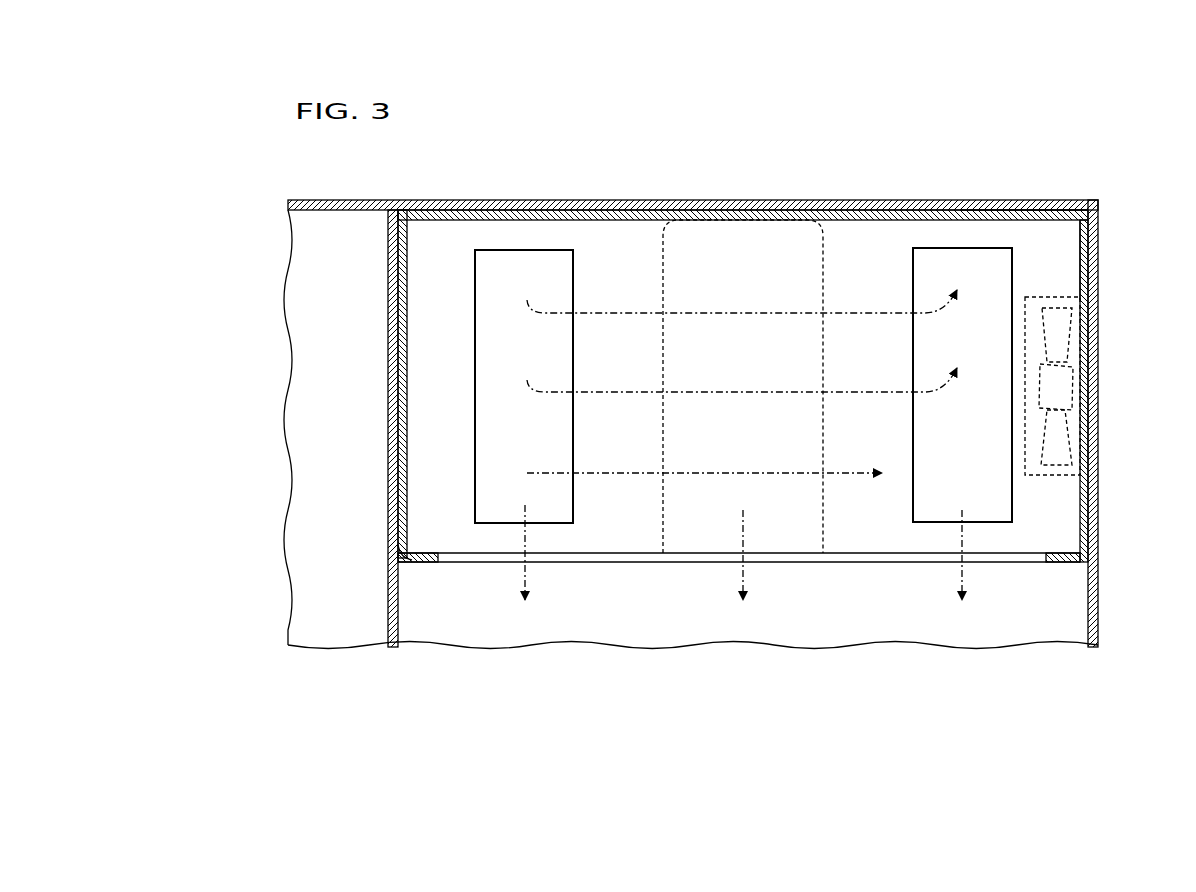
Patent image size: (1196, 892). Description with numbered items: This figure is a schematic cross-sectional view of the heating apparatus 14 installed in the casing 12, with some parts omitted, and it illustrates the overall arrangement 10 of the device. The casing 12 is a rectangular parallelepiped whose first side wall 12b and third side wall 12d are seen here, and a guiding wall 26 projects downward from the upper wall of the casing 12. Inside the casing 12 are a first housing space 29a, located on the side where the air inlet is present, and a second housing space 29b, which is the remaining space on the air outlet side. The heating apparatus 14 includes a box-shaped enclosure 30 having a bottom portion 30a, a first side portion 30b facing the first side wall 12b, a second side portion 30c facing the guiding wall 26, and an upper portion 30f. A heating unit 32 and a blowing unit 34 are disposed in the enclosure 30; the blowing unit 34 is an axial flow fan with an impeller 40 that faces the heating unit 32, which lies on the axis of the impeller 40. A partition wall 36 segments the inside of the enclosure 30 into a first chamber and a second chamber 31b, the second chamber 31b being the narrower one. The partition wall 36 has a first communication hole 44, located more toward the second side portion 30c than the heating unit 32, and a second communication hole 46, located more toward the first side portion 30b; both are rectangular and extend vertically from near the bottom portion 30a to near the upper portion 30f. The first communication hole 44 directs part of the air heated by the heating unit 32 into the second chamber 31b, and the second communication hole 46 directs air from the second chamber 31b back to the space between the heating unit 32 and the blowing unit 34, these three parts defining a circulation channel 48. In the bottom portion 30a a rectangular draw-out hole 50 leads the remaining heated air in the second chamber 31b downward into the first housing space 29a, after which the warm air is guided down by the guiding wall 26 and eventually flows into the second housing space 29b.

The heat exchanger unit 10 is at (484, 131).
The casing 12 is at (728, 392).
The third side wall 12d is at (357, 200).
The first side wall 12b is at (1096, 632).
The heating apparatus 14 is at (1022, 208).
The guiding wall 26 is at (388, 596).
The first housing space 29a is at (1070, 602).
The second housing space 29b is at (300, 352).
The enclosure 30 is at (782, 402).
The bottom portion 30a is at (425, 563).
The first side portion 30b is at (1083, 506).
The second side portion 30c is at (407, 353).
The upper portion 30f is at (879, 217).
The second chamber 31b is at (1055, 237).
The heating unit 32 is at (673, 277).
The blowing unit 34 is at (1052, 297).
The partition wall 36 is at (1057, 534).
The impeller 40 is at (1053, 394).
The first communication hole 44 is at (565, 352).
The second communication hole 46 is at (928, 358).
The circulation channel 48 is at (640, 242).
The draw-out hole 50 is at (884, 563).